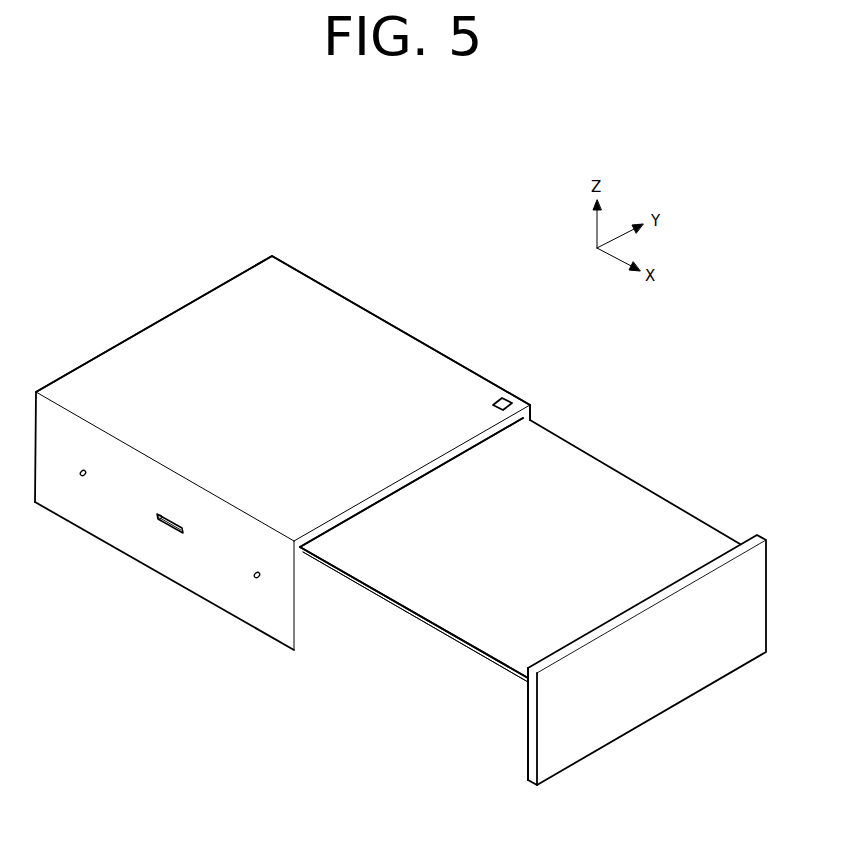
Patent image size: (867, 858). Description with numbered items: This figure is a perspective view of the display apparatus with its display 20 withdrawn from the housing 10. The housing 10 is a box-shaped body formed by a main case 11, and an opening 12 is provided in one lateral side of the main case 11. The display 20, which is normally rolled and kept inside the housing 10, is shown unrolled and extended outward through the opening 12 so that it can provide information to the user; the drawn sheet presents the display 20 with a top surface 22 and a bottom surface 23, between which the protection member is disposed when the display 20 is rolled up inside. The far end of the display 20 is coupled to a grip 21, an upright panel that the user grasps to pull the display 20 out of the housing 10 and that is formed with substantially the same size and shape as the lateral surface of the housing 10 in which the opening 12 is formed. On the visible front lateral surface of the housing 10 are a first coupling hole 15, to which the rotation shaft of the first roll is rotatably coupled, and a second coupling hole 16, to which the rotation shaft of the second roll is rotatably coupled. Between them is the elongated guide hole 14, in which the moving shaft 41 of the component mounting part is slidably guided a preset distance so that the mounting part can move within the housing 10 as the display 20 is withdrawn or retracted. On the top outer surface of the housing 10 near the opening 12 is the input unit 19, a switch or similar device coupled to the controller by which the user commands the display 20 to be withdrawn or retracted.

The housing 10 is at (484, 359).
The main case 11 is at (418, 350).
The opening 12 is at (497, 437).
The guide hole 14 is at (172, 531).
The first coupling hole 15 is at (80, 476).
The second coupling hole 16 is at (254, 578).
The input unit 19 is at (506, 397).
The display 20 is at (637, 503).
The grip 21 is at (673, 693).
The top surface 22 is at (413, 618).
The bottom surface 23 is at (405, 600).
The moving shaft 41 is at (157, 517).